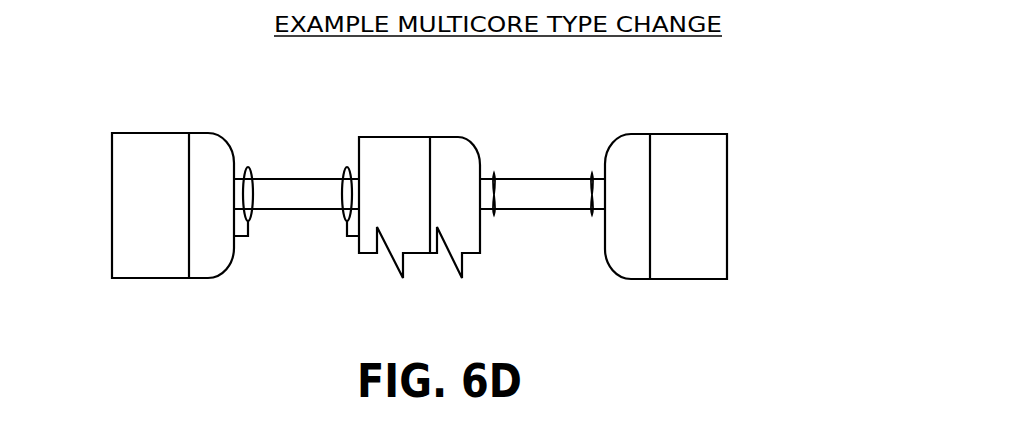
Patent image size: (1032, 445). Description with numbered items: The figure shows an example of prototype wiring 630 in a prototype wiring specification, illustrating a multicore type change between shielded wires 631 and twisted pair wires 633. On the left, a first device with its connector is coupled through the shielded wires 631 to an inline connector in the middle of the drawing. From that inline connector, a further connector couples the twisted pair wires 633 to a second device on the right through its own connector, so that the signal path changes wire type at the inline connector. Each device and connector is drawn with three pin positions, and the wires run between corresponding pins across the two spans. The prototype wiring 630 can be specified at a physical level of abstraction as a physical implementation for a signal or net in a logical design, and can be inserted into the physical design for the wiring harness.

The prototype wiring 630 is at (800, 130).
The shielded wires 631 is at (294, 153).
The twisted pair wires 633 is at (541, 154).